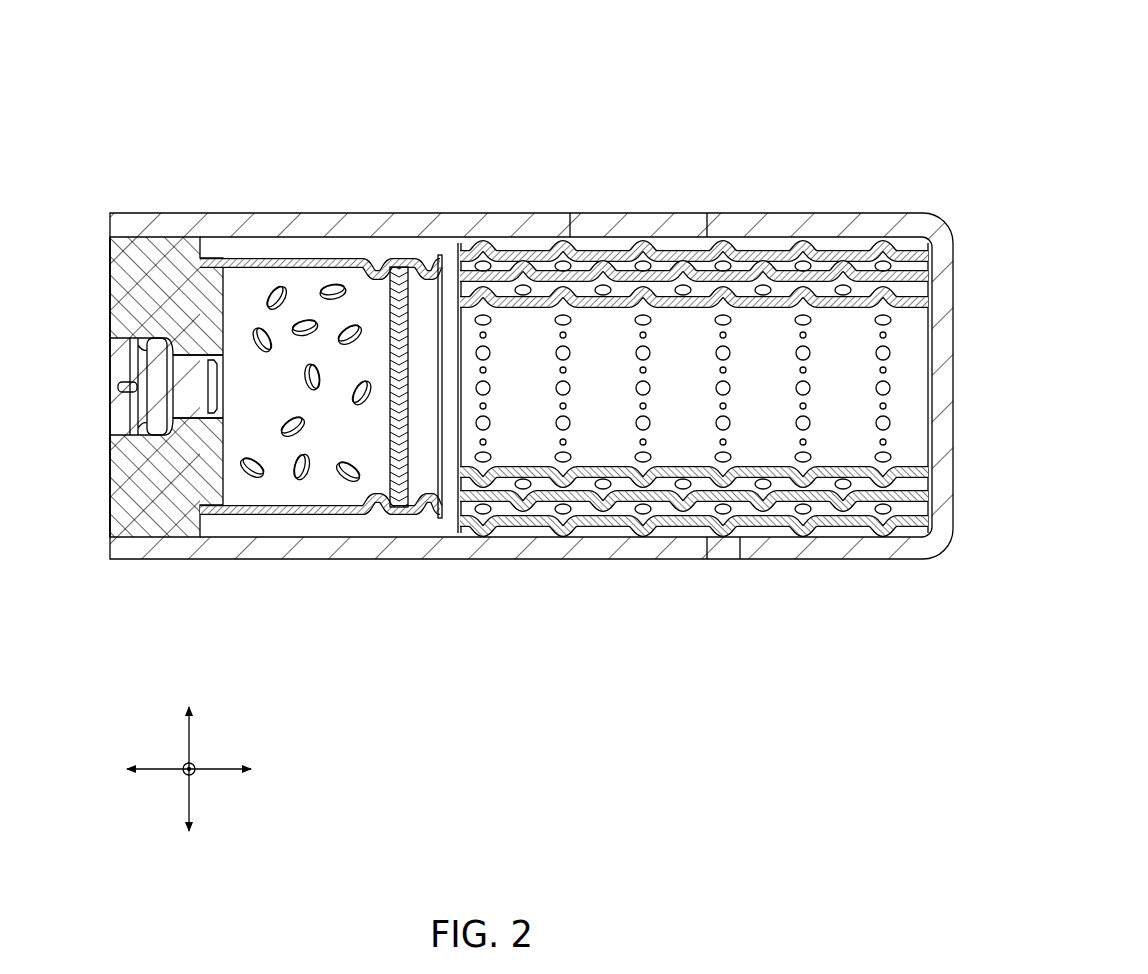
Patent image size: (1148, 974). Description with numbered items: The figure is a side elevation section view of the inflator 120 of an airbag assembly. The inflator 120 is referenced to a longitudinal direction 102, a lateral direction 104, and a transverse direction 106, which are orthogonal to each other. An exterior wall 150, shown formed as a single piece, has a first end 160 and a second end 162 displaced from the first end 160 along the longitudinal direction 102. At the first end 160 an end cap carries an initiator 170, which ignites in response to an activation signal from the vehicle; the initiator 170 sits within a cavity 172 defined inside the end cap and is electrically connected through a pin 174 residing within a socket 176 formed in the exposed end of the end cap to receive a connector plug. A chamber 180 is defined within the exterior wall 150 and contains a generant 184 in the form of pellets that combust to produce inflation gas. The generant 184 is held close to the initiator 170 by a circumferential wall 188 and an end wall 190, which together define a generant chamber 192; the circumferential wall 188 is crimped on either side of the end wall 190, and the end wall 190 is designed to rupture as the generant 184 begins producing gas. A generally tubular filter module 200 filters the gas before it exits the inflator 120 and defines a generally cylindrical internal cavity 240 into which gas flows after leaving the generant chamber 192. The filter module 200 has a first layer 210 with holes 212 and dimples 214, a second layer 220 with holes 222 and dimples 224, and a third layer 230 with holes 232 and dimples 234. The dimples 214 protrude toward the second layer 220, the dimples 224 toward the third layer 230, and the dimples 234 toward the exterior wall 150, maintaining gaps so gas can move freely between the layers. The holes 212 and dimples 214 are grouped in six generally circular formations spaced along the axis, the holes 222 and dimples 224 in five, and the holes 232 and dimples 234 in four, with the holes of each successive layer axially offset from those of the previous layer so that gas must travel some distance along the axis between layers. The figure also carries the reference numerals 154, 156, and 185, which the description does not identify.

The longitudinal direction 102 is at (220, 772).
The lateral direction 104 is at (193, 762).
The transverse direction 106 is at (192, 812).
The inflator 120 is at (662, 60).
The exterior wall 150 is at (279, 198).
The inner liner 154 is at (540, 550).
The housing wall 156 is at (733, 553).
The first end 160 is at (132, 220).
The second end 162 is at (900, 215).
The initiator 170 is at (197, 395).
The cavity 172 is at (190, 360).
The pin 174 is at (138, 385).
The socket 176 is at (135, 423).
The chamber 180 is at (382, 243).
The generant 184 is at (345, 500).
The base end 185 is at (110, 525).
The circumferential wall 188 is at (262, 517).
The end wall 190 is at (418, 268).
The generant chamber 192 is at (372, 445).
The filter module 200 is at (610, 236).
The first layer 210 is at (840, 292).
The holes 212 is at (490, 530).
The dimples 214 is at (567, 482).
The second layer 220 is at (782, 283).
The holes 222 is at (828, 485).
The dimples 224 is at (687, 500).
The third layer 230 is at (850, 240).
The holes 232 is at (632, 243).
The dimples 234 is at (660, 243).
The internal cavity 240 is at (627, 405).